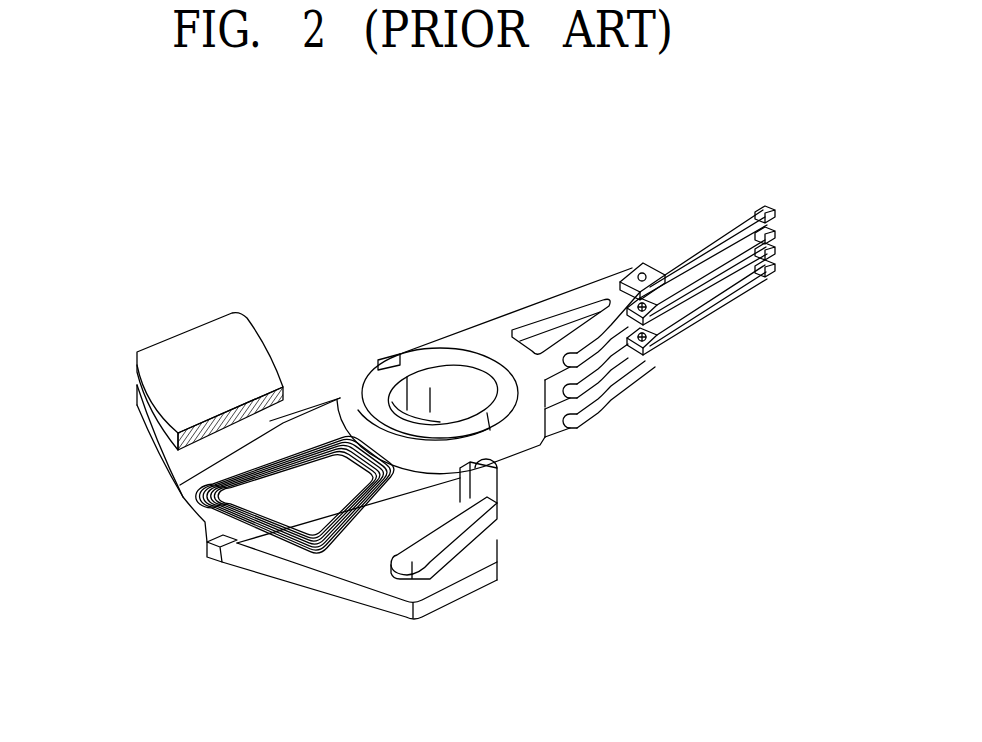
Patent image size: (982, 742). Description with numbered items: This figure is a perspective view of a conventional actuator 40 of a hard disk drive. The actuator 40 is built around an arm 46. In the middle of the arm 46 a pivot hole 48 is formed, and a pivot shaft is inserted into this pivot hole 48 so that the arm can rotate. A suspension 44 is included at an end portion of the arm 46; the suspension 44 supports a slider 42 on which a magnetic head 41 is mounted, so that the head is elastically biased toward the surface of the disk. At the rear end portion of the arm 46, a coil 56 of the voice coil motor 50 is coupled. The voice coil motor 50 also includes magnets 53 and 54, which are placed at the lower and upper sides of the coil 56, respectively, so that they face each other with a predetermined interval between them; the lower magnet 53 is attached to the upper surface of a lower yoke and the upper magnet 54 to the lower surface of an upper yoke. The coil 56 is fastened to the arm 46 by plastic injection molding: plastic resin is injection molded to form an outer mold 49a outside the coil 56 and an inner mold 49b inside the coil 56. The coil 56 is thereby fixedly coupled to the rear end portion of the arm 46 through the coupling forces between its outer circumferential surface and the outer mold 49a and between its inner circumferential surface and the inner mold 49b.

The conventional actuator 40 is at (384, 302).
The magnetic head 41 is at (773, 224).
The slider 42 is at (753, 223).
The suspension 44 is at (678, 257).
The arm 46 is at (543, 305).
The pivot hole 48 is at (447, 378).
The outer mold 49a is at (367, 525).
The inner mold 49b is at (297, 520).
The voice coil motor 50 is at (113, 476).
The magnet 53 is at (140, 423).
The magnet 54 is at (137, 365).
The coil 56 is at (183, 497).